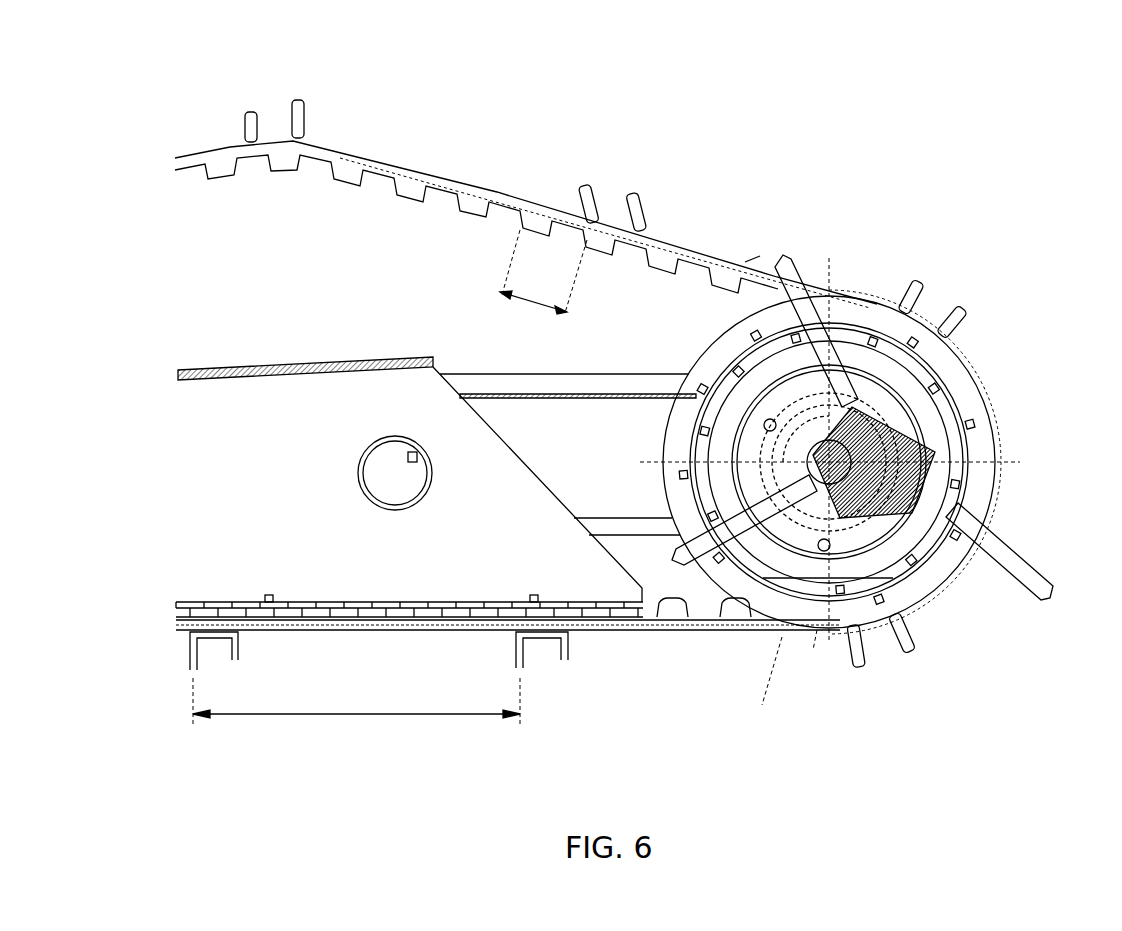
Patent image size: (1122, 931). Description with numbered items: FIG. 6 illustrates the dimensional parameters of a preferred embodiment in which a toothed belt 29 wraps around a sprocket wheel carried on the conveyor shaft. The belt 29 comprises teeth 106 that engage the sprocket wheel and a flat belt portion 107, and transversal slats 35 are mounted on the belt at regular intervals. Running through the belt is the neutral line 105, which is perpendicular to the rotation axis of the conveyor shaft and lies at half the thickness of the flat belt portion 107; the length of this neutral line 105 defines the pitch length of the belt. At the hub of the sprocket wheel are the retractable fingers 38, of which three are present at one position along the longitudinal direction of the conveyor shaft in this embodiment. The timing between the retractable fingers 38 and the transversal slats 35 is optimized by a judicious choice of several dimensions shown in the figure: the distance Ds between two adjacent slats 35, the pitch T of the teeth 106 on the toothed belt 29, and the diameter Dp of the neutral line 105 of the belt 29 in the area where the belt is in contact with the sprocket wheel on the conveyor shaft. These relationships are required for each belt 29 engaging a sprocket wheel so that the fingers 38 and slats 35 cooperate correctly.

The belt 29 is at (220, 155).
The transversal slats 35 is at (310, 105).
The neutral line 105 is at (726, 273).
The retractable fingers 38 is at (803, 283).
The teeth 106 is at (672, 605).
The flat belt portion 107 is at (632, 622).
The pitch of the teeth T is at (570, 316).
The distance between two adjacent slats Ds is at (380, 714).
The diameter of the neutral line Dp is at (783, 687).